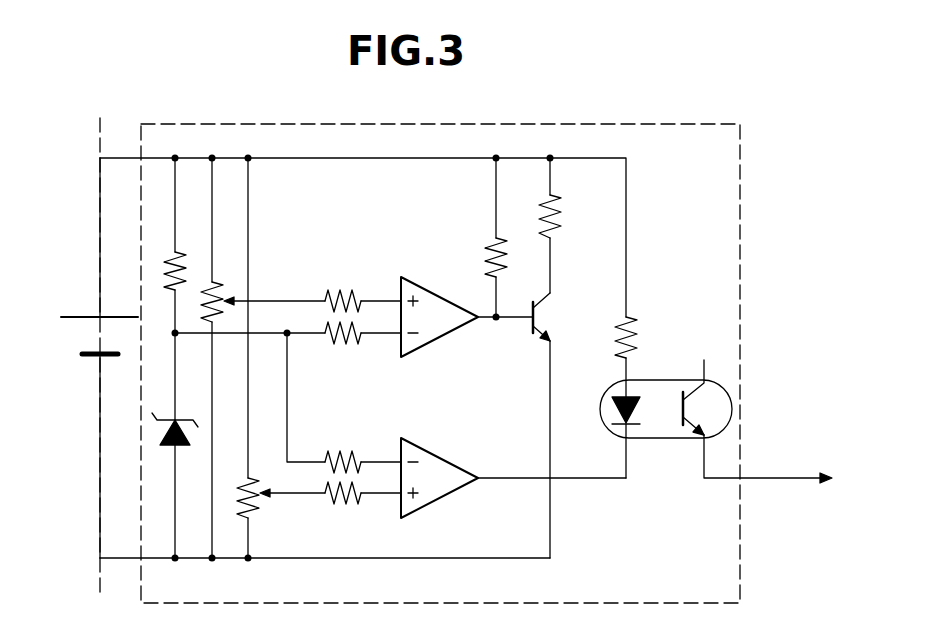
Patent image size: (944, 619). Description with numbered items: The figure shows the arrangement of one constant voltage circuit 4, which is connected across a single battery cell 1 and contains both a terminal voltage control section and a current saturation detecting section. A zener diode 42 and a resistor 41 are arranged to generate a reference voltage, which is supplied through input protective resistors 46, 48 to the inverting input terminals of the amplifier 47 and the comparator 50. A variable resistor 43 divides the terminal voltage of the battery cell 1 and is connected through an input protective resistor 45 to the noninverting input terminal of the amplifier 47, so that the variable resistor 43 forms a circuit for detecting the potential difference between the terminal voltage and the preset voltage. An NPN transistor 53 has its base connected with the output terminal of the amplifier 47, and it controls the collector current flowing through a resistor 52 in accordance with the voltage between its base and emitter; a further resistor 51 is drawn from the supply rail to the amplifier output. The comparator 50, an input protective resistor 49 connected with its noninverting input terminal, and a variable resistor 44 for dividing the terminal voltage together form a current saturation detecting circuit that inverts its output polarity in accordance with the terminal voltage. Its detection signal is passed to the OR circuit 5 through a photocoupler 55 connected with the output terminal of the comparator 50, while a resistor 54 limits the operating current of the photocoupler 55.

The single battery cell 1 is at (82, 306).
The constant voltage circuit 4 is at (732, 195).
The OR circuit 5 is at (779, 466).
The resistor 41 is at (190, 262).
The zener diode 42 is at (160, 447).
The variable resistor 43 is at (228, 290).
The variable resistor 44 is at (270, 505).
The input protective resistor 45 is at (338, 283).
The input protective resistor 46 is at (344, 349).
The amplifier 47 is at (447, 326).
The input protective resistor 48 is at (346, 449).
The input protective resistor 49 is at (347, 505).
The comparator 50 is at (452, 483).
The resistor 51 is at (486, 243).
The resistor 52 is at (561, 210).
The NPN transistor 53 is at (537, 342).
The resistor 54 is at (640, 305).
The photocoupler 55 is at (664, 438).